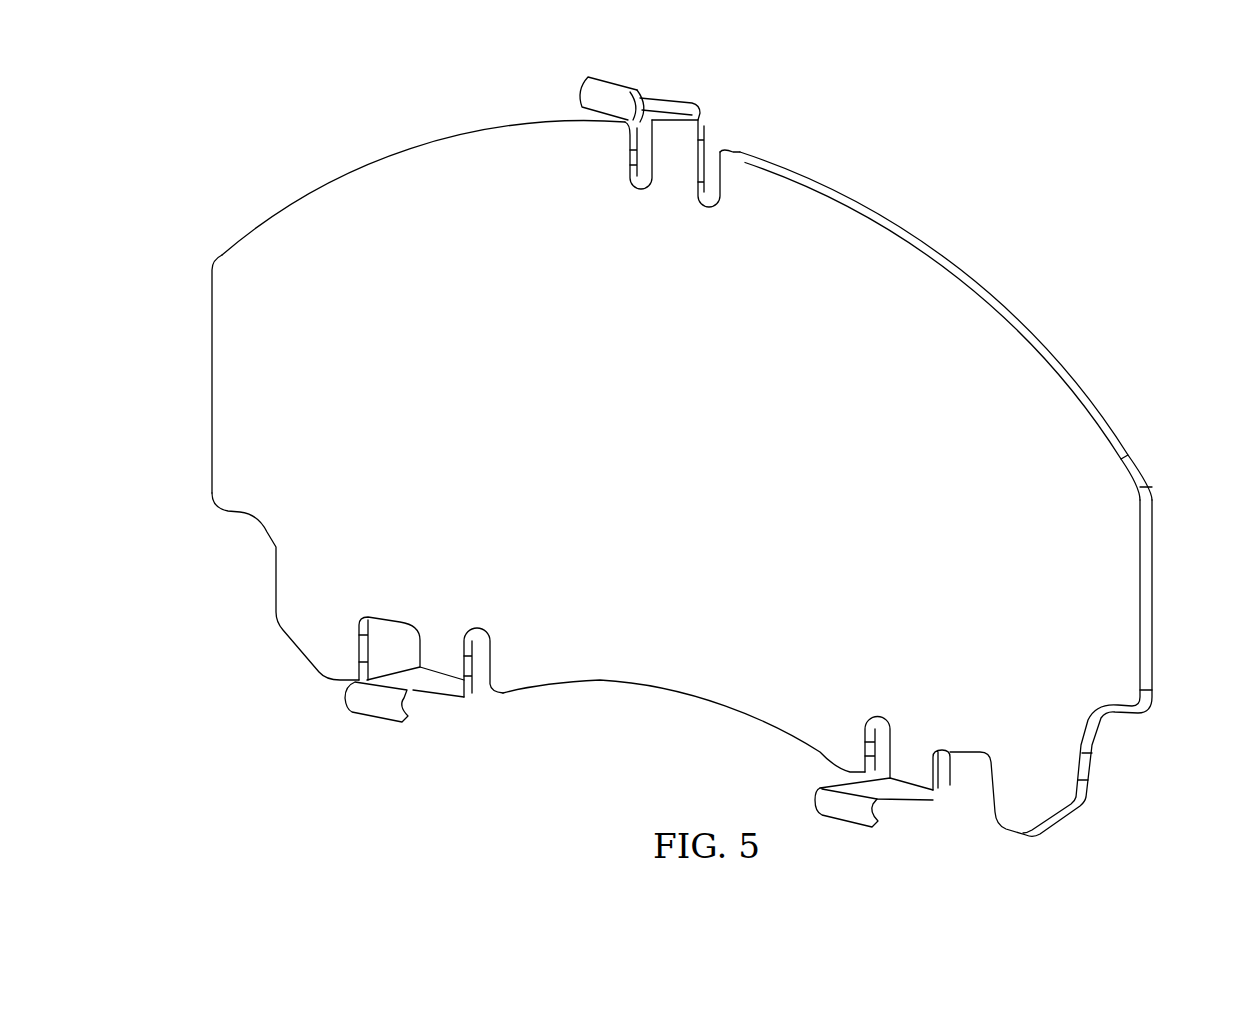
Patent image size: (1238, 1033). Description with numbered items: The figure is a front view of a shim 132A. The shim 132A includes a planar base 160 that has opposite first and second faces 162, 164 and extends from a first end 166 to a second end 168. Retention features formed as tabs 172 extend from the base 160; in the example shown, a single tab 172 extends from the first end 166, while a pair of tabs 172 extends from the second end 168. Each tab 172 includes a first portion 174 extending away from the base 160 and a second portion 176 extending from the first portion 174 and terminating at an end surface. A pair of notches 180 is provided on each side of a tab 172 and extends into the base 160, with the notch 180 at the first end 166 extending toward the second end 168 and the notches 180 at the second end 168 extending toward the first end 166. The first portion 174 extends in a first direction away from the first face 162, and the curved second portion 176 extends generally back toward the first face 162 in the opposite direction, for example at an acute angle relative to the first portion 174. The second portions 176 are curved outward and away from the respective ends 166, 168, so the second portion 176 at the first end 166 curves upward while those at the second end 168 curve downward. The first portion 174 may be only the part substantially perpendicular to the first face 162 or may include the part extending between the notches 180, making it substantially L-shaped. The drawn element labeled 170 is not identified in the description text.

The shim 132A is at (232, 198).
The planar base 160 is at (695, 423).
The first face 162 is at (963, 322).
The second face 164 is at (1154, 530).
The first end 166 is at (381, 122).
The second end 168 is at (617, 720).
The bent flange 170 is at (993, 252).
The tab 172 is at (742, 133).
The first portion 174 is at (688, 113).
The second portion 176 is at (590, 100).
The notch 180 is at (712, 233).